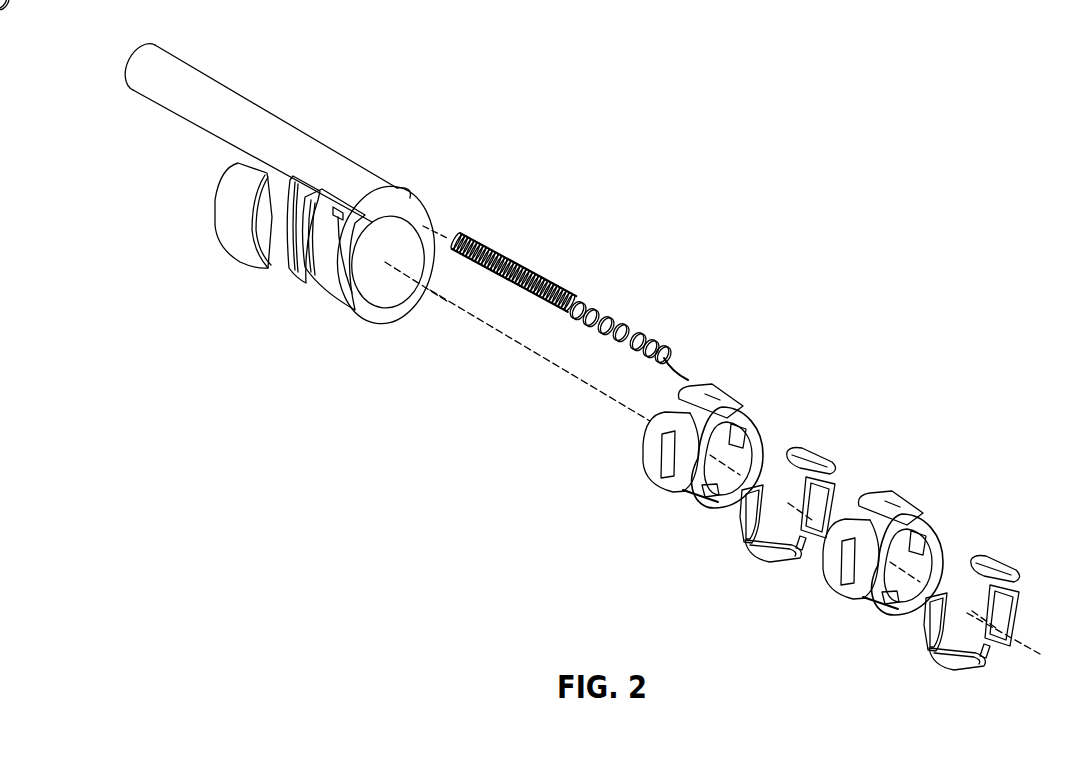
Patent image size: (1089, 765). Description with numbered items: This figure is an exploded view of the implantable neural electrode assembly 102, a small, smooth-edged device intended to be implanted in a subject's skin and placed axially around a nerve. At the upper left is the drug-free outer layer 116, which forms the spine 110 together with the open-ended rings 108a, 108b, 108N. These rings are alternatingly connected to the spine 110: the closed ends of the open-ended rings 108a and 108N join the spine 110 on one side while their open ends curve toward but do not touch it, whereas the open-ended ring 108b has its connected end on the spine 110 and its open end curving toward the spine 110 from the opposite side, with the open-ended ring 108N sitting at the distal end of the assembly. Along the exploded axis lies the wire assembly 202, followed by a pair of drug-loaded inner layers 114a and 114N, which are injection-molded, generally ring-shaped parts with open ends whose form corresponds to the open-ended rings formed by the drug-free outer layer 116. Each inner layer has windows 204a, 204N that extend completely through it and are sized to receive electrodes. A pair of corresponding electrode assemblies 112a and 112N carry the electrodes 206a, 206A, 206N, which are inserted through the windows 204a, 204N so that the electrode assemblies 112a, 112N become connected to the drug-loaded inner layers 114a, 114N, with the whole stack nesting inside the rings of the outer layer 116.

The implantable neural electrode assembly 102 is at (942, 151).
The spine 110 is at (291, 127).
The open-ended ring 108a is at (247, 249).
The open-ended ring 108b is at (283, 275).
The open-ended ring 108N is at (328, 295).
The drug-free outer layer 116 is at (383, 312).
The wire assembly 202 is at (605, 320).
The drug-loaded inner layer 114a is at (658, 483).
The drug-loaded inner layer 114N is at (838, 588).
The window 204a is at (743, 435).
The window 204N is at (923, 536).
The electrode 206a is at (753, 518).
The electrode 206A is at (827, 502).
The electrode 206N is at (1013, 604).
The electrode assembly 112a is at (744, 572).
The electrode assembly 112N is at (929, 663).